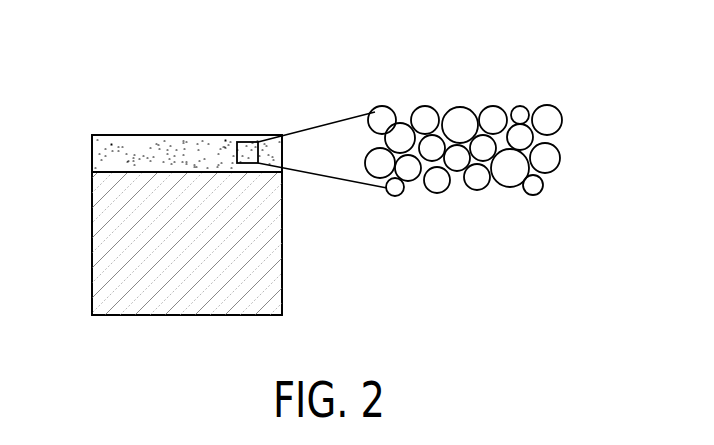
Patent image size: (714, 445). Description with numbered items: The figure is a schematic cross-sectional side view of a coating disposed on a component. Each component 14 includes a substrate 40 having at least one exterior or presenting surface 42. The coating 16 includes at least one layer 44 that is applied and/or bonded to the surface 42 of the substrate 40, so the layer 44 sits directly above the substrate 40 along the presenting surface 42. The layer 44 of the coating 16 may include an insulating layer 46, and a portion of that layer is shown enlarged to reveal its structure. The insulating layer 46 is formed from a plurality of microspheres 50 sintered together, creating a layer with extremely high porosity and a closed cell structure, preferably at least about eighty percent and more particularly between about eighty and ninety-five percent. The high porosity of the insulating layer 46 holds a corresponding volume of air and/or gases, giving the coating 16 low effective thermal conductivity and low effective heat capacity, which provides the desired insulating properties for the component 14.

The component 14 is at (130, 331).
The coating 16 is at (118, 113).
The substrate 40 is at (108, 271).
The presenting surface 42 is at (107, 174).
The layer 44 is at (96, 152).
The insulating layer 46 is at (218, 150).
The microspheres 50 is at (557, 108).